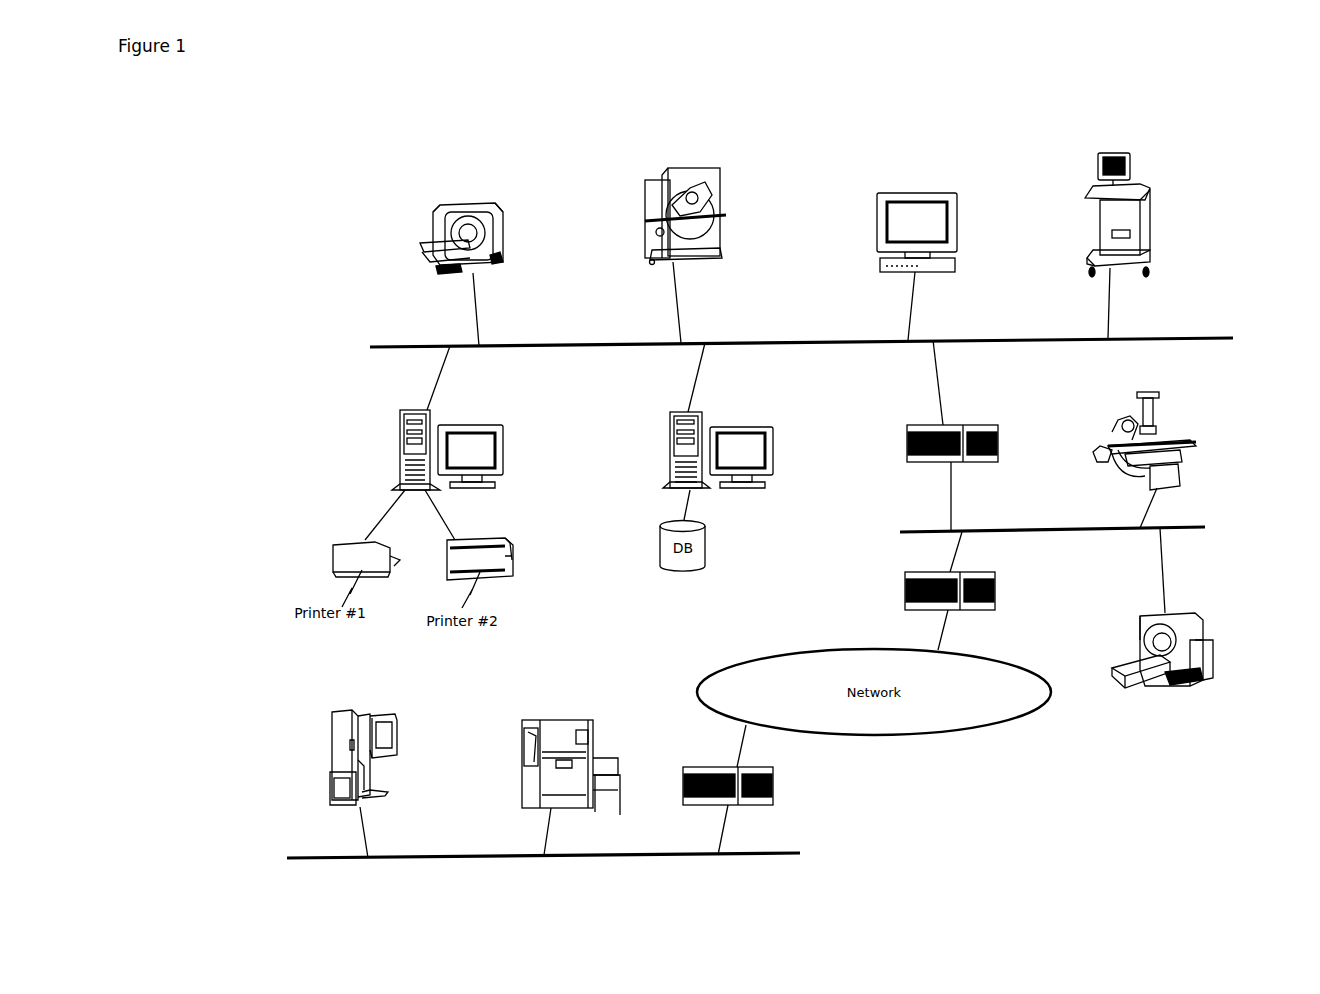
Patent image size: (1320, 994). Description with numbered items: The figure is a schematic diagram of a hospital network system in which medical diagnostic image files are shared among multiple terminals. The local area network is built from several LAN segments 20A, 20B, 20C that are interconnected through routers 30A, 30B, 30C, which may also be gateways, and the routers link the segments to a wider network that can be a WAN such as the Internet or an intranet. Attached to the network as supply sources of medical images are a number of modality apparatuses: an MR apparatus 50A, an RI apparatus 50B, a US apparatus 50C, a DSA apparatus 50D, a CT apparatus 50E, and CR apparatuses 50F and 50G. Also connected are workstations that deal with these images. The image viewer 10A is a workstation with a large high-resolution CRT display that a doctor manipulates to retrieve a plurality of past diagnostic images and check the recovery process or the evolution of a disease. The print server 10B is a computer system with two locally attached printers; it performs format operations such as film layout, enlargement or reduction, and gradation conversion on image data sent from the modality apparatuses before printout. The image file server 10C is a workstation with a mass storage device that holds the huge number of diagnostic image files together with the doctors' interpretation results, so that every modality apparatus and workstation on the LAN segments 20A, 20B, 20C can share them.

The MR apparatus 50A is at (494, 196).
The RI apparatus 50B is at (734, 193).
The image viewer workstation 10A is at (931, 196).
The US apparatus 50C is at (1156, 192).
The DSA apparatus 50D is at (1199, 368).
The CT apparatus 50E is at (1195, 686).
The CR apparatus 50F is at (599, 729).
The modality apparatus (FCR) 50G is at (399, 731).
The print server 10B is at (384, 431).
The image file server 10C is at (644, 450).
The LAN segment 20A is at (801, 332).
The LAN segment 20B is at (1052, 521).
The LAN segment 20C is at (543, 866).
The router 30A is at (913, 426).
The router 30B is at (891, 581).
The router 30C is at (792, 788).